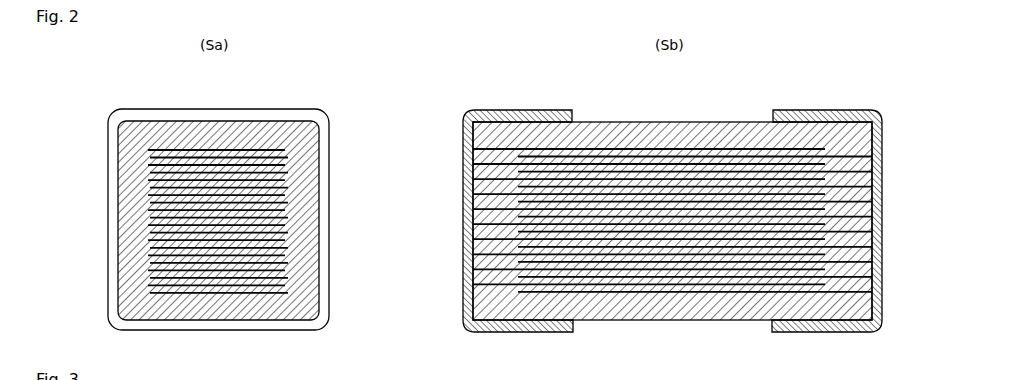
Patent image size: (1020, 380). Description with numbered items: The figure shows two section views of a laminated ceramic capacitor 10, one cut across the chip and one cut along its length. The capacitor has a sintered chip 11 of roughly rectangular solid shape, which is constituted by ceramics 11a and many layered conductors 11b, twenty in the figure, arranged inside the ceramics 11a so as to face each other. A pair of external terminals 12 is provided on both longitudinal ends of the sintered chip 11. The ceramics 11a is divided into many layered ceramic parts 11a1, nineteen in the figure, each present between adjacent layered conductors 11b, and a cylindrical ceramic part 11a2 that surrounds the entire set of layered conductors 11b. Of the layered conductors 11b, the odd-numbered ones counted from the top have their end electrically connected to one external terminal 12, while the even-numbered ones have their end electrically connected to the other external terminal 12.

The laminated ceramic capacitor 10 is at (126, 106).
The sintered chip 11 is at (195, 123).
The external terminal 12 is at (272, 122).
The ceramics 11a is at (120, 128).
The layered conductor 11b is at (148, 152).
The layered ceramic part 11a1 is at (297, 150).
The cylindrical ceramic part 11a2 is at (300, 170).